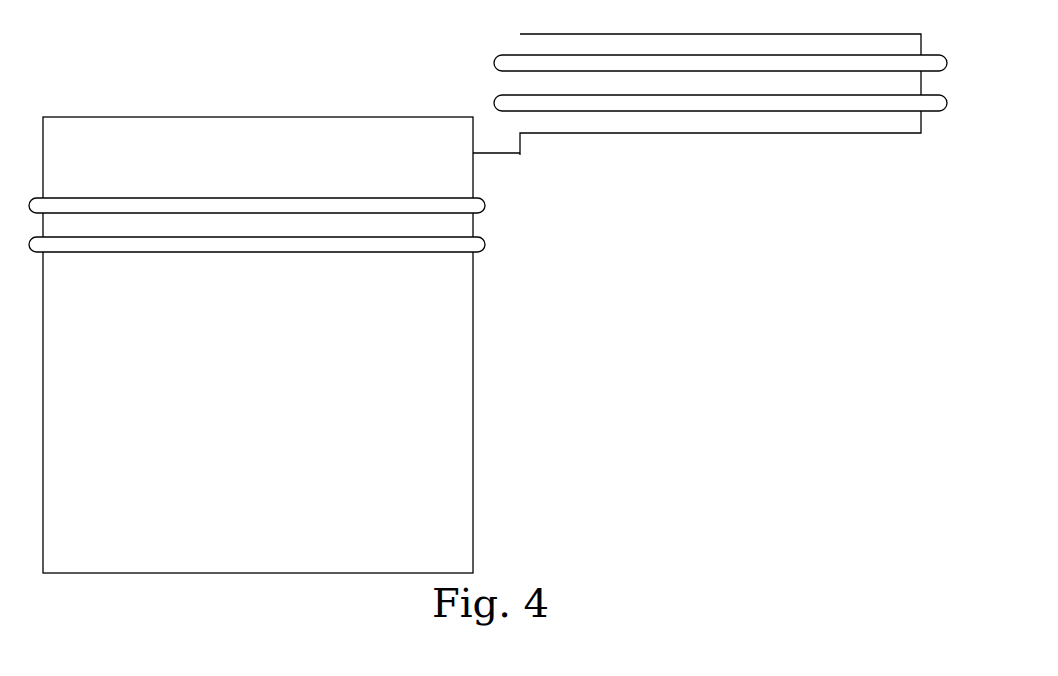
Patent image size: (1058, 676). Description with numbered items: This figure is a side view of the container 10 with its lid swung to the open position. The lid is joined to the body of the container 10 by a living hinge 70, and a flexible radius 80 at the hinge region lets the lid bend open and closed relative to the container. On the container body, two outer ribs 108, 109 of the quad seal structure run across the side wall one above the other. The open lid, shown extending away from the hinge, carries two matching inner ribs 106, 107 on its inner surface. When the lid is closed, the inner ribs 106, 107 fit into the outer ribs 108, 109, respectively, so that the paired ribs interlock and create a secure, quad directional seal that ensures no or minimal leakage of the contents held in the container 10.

The container 10 is at (502, 410).
The living hinge 70 is at (520, 157).
The flexible radius 80 is at (477, 158).
The inner rib 106 is at (488, 103).
The inner rib 107 is at (507, 56).
The outer rib 108 is at (483, 211).
The outer rib 109 is at (483, 251).